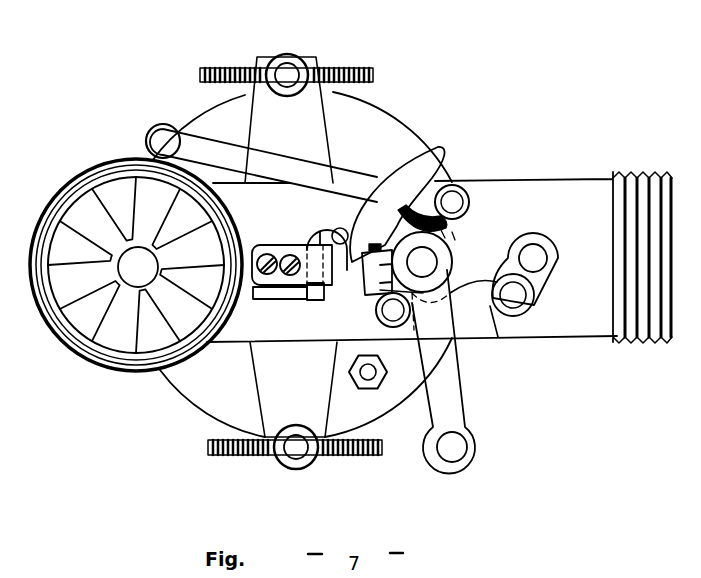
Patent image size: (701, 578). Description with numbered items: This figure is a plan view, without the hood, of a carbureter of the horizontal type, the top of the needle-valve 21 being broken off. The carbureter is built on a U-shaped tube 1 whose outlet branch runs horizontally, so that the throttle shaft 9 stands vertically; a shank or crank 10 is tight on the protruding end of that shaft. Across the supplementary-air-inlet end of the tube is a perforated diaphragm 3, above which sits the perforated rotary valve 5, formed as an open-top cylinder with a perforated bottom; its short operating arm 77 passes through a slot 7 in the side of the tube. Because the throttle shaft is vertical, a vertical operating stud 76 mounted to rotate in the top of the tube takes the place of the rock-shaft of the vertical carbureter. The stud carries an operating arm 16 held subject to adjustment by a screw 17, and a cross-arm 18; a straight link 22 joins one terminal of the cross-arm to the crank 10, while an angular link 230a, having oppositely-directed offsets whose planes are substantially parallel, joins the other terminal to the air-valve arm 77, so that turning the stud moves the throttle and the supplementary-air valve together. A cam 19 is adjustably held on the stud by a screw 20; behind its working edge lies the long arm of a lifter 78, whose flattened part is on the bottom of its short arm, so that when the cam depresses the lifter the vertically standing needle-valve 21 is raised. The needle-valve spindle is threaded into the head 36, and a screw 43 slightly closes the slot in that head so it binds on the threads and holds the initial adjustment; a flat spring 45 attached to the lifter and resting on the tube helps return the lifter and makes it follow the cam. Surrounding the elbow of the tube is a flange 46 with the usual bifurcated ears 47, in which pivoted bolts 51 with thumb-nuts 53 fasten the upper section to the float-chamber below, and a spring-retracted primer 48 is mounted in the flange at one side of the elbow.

The tube 1 is at (325, 235).
The perforated diaphragm 3 is at (136, 265).
The rotary shutter or valve 5 is at (136, 265).
The slot 7 is at (96, 168).
The throttle shaft 9 is at (538, 254).
The shank 10 is at (544, 287).
The operating arm 16 is at (456, 387).
The screw 17 is at (377, 257).
The cross-arm 18 is at (473, 181).
The cam 19 is at (404, 168).
The screw 20 is at (470, 214).
The needle-valve 21 is at (290, 256).
The straight link 22 is at (502, 335).
The head 36 is at (324, 308).
The screw 43 is at (259, 246).
The flat spring 45 is at (283, 300).
The flange 46 is at (302, 264).
The bifurcated ears 47 is at (311, 58).
The spring-retracted primer 48 is at (349, 374).
The bolts 51 is at (289, 62).
The thumb-nuts 53 is at (230, 58).
The operating stud 76 is at (436, 260).
The supplementary-air-valve arm 77 is at (146, 137).
The lifter 78 is at (380, 301).
The angular link 230a is at (280, 160).